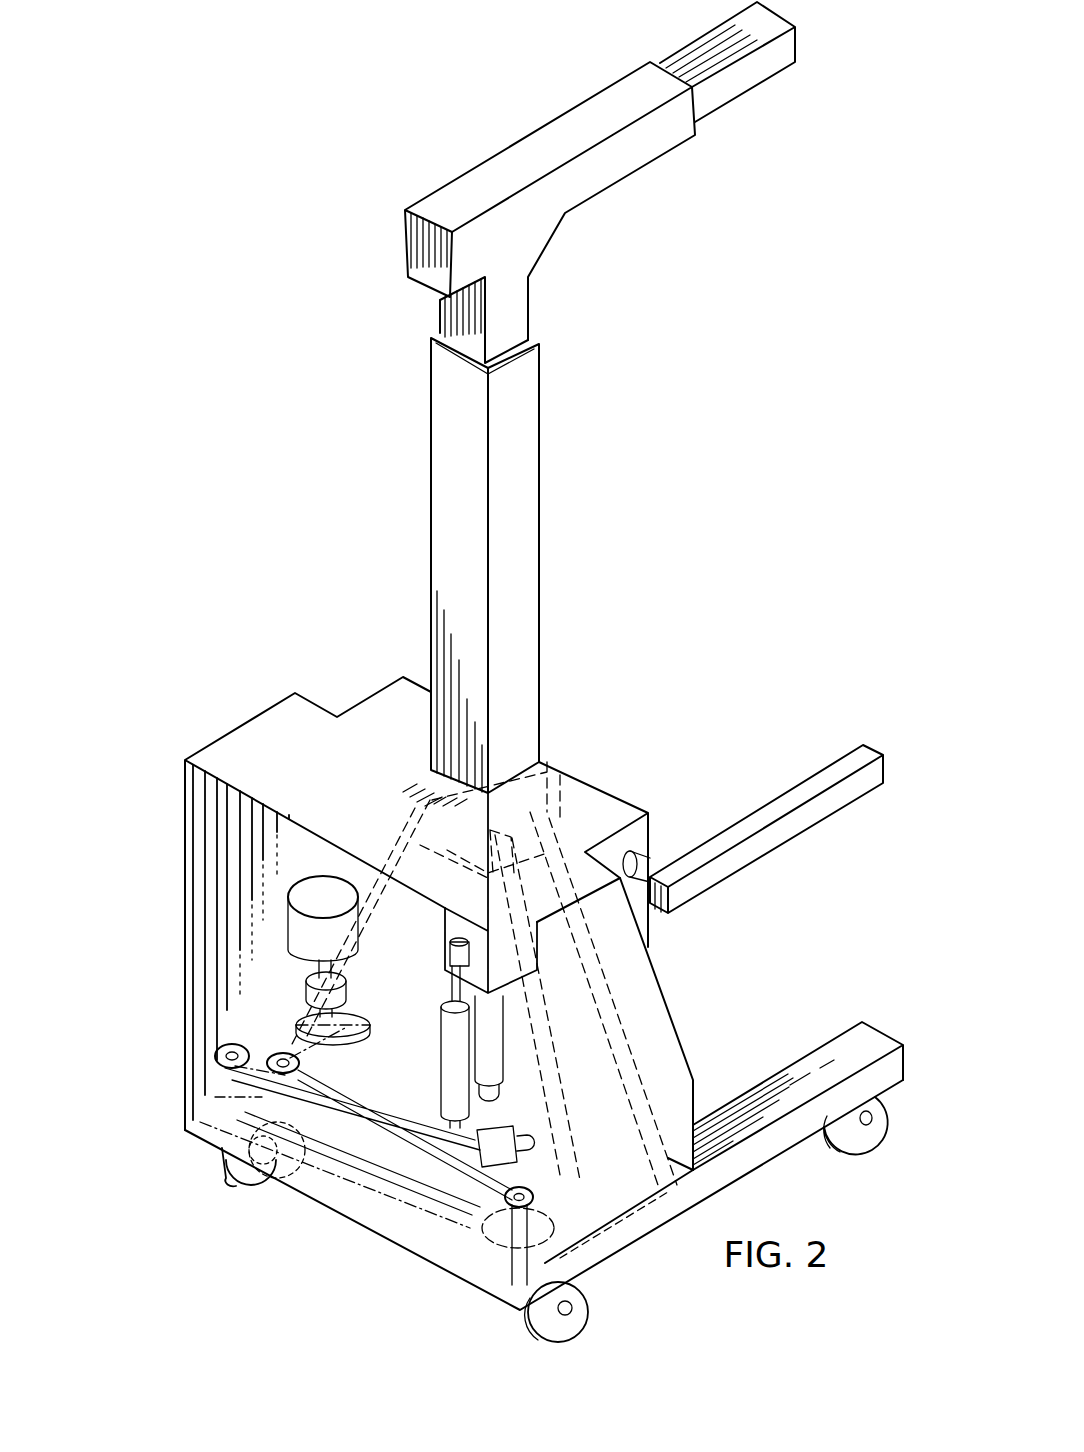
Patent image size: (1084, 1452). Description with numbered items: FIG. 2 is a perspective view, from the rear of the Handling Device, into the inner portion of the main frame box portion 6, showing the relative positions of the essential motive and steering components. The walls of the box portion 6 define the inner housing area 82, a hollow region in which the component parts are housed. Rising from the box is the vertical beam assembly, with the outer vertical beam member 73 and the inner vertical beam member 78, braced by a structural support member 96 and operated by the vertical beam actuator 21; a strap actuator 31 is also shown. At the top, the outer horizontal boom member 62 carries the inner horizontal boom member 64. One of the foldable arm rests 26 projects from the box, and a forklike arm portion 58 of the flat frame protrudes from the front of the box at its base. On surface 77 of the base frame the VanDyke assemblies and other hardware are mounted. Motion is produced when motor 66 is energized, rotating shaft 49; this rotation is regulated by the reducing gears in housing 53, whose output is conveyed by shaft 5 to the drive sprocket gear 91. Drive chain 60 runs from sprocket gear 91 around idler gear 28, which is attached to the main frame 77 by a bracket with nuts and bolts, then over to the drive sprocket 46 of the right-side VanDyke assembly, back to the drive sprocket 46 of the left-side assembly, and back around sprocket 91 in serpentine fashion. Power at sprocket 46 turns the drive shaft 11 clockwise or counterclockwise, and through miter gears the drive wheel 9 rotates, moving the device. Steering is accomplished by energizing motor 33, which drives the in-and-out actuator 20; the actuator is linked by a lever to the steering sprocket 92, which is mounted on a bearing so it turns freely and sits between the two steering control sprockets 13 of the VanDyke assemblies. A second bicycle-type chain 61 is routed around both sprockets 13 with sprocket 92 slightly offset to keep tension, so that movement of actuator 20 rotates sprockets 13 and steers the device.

The outer horizontal boom member 62 is at (533, 138).
The inner horizontal boom member 64 is at (733, 85).
The inner vertical beam member 78 is at (517, 308).
The outer vertical beam member 73 is at (530, 455).
The inner housing area 82 is at (393, 896).
The main frame box portion 6 is at (657, 1013).
The foldable arm rest 26 is at (780, 803).
The arm portion 58 is at (807, 1060).
The drive shaft 11 is at (513, 1262).
The main frame surface 77 is at (638, 1187).
The drive wheel 9 is at (230, 1185).
The steering sprocket 92 is at (338, 1152).
The second bicycle-type chain 61 is at (373, 1183).
The actuator 20 is at (463, 1145).
The drive chain 60 is at (303, 1090).
The idler gear 28 is at (217, 1052).
The drive sprocket 46 is at (300, 1066).
The steering control sprocket 13 is at (257, 1097).
The motor 66 is at (302, 922).
The shaft 49 is at (311, 972).
The reducing gear housing 53 is at (344, 989).
The shaft 5 is at (337, 1014).
The drive sprocket gear 91 is at (302, 1024).
The vertical beam actuator 21 is at (448, 1065).
The strap actuator 31 is at (500, 1039).
The motor 33 is at (497, 1137).
The structural support member 96 is at (392, 848).